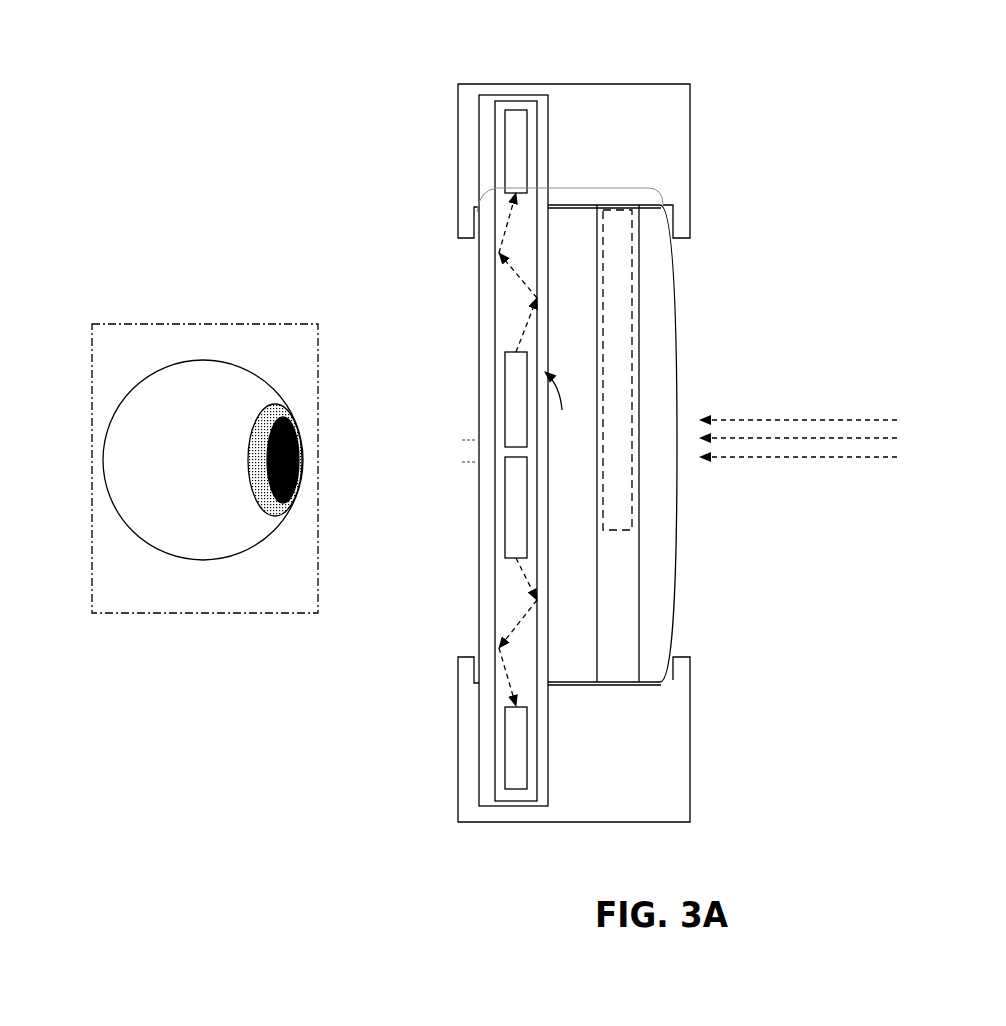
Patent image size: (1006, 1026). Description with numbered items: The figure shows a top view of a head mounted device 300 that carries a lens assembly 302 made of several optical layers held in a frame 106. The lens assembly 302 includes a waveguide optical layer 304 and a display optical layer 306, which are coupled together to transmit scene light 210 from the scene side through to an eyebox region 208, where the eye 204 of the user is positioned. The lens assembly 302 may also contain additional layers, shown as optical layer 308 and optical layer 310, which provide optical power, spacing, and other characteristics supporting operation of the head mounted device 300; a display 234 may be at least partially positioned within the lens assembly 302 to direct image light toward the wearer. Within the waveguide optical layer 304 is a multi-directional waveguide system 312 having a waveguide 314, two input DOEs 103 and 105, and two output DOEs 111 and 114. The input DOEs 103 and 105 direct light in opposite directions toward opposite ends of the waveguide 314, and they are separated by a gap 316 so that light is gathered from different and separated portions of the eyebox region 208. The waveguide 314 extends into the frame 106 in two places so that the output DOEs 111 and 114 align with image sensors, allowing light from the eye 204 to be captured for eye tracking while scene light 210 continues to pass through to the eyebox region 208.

The head mounted device 300 is at (658, 34).
The frame 106 is at (606, 122).
The lens assembly 302 is at (572, 187).
The output DOE 114 is at (512, 149).
The waveguide 314 is at (505, 305).
The waveguide optical layer 304 is at (485, 607).
The input DOE 105 is at (512, 403).
The input DOE 103 is at (512, 510).
The gap 316 is at (462, 462).
The output DOE 111 is at (512, 767).
The multi-directional waveguide system 312 is at (569, 399).
The display 234 is at (625, 267).
The optical layer 310 is at (677, 540).
The display optical layer 306 is at (625, 602).
The optical layer 308 is at (565, 648).
The scene light 210 is at (853, 437).
The eyebox region 208 is at (198, 613).
The eye 204 is at (188, 462).